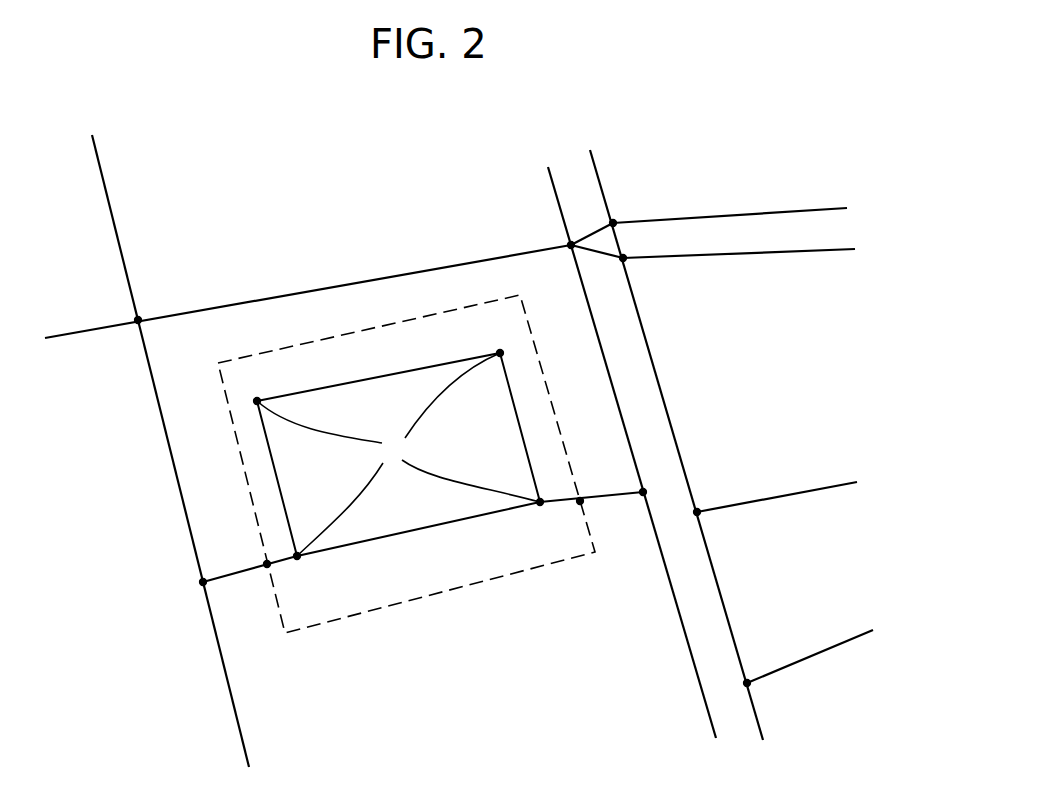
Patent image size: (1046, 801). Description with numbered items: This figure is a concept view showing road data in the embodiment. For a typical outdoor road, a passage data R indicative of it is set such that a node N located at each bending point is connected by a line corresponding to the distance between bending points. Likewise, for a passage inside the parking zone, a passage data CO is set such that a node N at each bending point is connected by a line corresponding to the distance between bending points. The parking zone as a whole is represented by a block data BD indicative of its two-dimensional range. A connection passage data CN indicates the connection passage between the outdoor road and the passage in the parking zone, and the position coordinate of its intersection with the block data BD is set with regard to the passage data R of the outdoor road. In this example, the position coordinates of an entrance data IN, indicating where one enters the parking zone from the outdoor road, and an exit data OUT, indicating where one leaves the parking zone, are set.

The passage data R is at (128, 284).
The node N is at (138, 320).
The passage data CO is at (368, 380).
The connection passage data CN is at (227, 576).
The entrance data IN is at (267, 564).
The exit data OUT is at (580, 501).
The block data BD is at (482, 582).